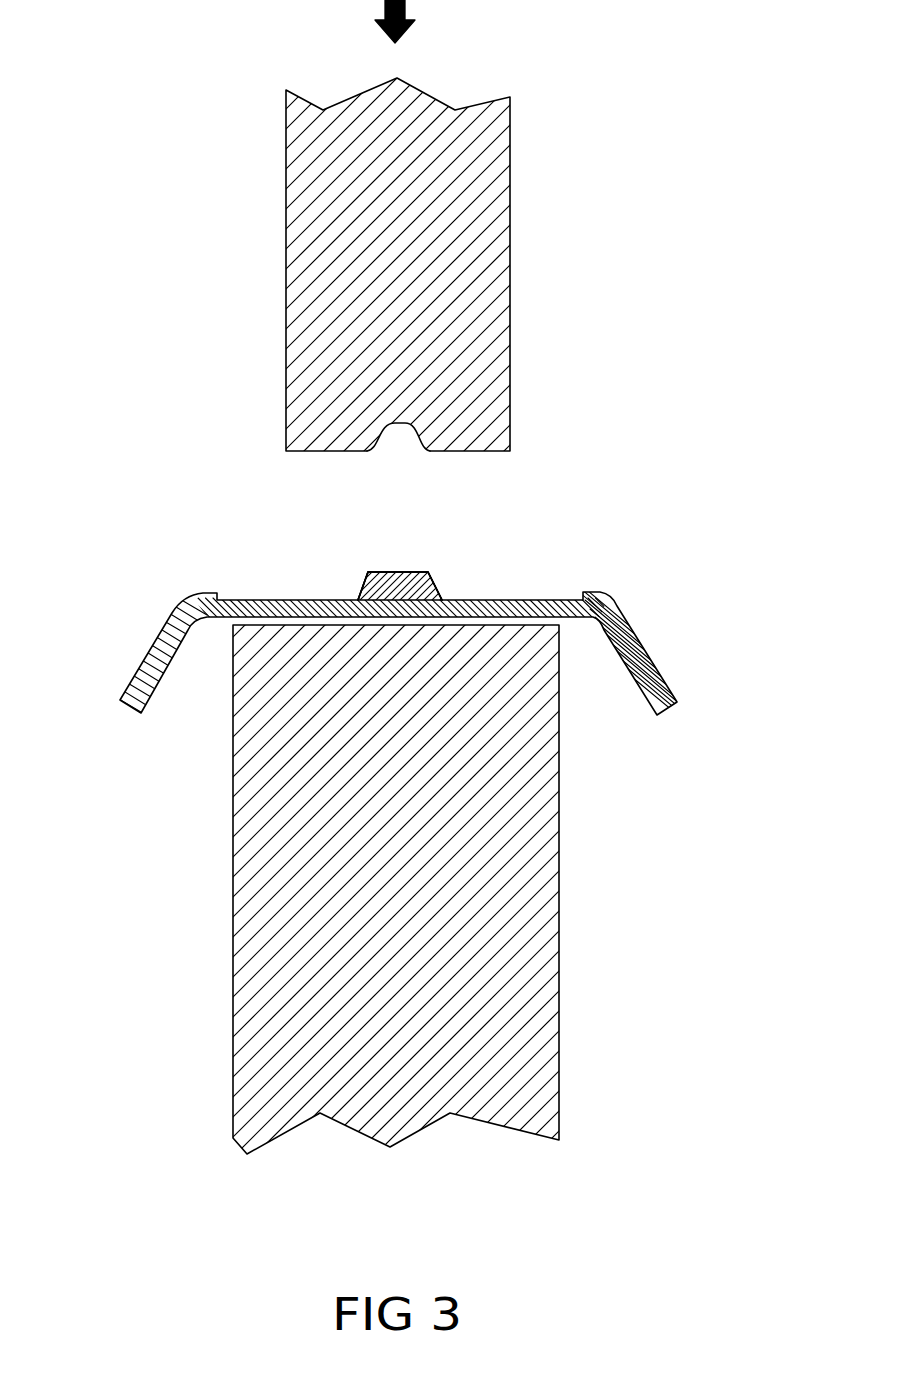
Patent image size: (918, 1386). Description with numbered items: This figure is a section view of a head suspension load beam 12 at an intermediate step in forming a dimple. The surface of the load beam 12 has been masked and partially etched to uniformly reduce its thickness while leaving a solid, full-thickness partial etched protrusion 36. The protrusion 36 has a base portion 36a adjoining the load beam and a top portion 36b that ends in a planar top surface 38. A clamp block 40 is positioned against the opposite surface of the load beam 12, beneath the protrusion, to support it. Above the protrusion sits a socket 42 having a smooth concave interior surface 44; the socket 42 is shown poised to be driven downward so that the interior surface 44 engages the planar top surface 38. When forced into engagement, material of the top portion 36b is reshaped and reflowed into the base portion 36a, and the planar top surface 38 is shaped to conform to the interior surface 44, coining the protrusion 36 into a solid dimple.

The load beam 12 is at (533, 607).
The partial etched protrusion 36 is at (417, 587).
The base portion 36a is at (358, 590).
The top portion 36b is at (363, 580).
The planar top surface 38 is at (387, 572).
The clamp block 40 is at (512, 832).
The socket 42 is at (478, 350).
The concave interior surface 44 is at (423, 437).